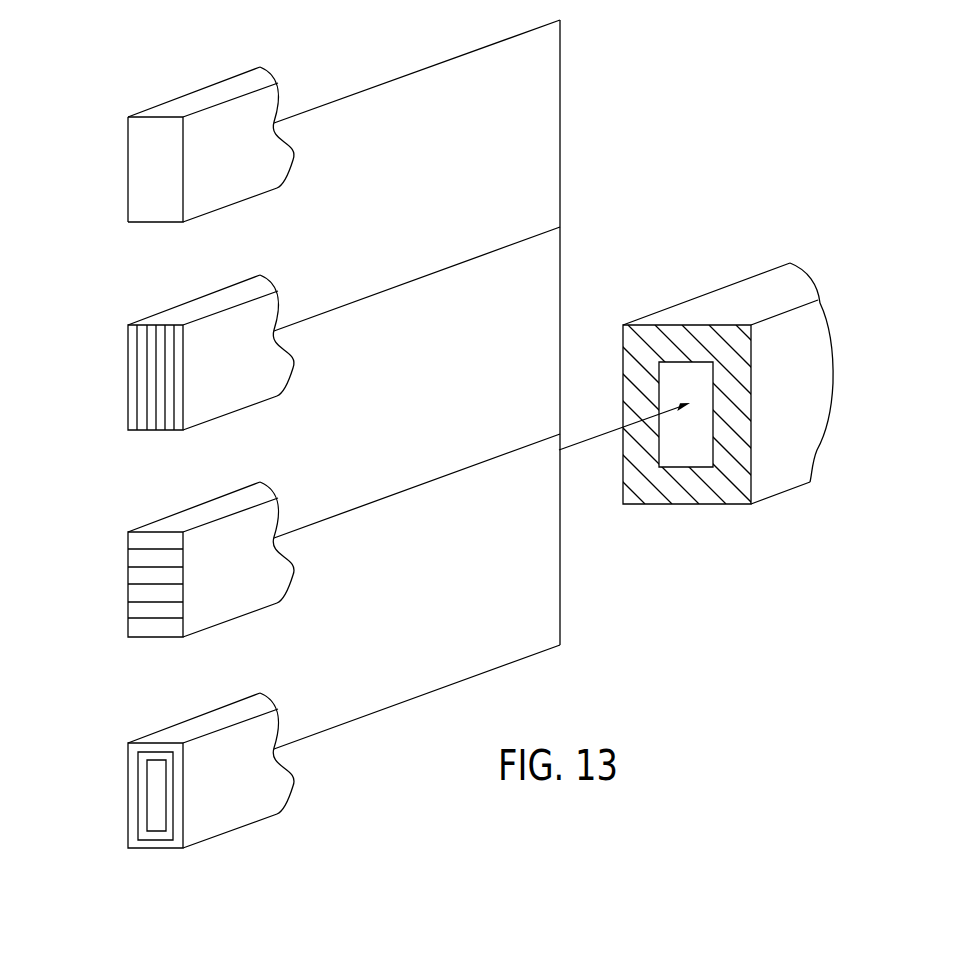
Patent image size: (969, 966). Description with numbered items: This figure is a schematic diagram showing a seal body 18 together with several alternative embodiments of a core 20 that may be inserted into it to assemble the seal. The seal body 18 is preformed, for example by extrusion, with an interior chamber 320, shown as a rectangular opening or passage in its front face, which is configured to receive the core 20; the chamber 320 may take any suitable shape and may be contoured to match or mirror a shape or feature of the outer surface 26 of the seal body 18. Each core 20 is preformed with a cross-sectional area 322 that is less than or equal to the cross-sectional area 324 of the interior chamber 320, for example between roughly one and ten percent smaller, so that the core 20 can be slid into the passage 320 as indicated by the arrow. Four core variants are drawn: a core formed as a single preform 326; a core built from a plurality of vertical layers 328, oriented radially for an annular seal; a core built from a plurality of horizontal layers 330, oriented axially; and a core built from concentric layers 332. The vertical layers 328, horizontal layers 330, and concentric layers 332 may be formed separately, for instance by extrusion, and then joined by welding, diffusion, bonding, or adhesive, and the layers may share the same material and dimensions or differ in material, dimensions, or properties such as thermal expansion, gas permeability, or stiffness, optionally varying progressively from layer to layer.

The core 20 is at (208, 98).
The cross-sectional area 322 is at (175, 180).
The single preform 326 is at (128, 204).
The vertical layers 328 is at (125, 377).
The horizontal layers 330 is at (121, 584).
The concentric layers 332 is at (125, 795).
The seal body 18 is at (723, 301).
The outer surface 26 is at (773, 282).
The interior chamber 320 is at (682, 383).
The cross-sectional area 324 is at (705, 457).